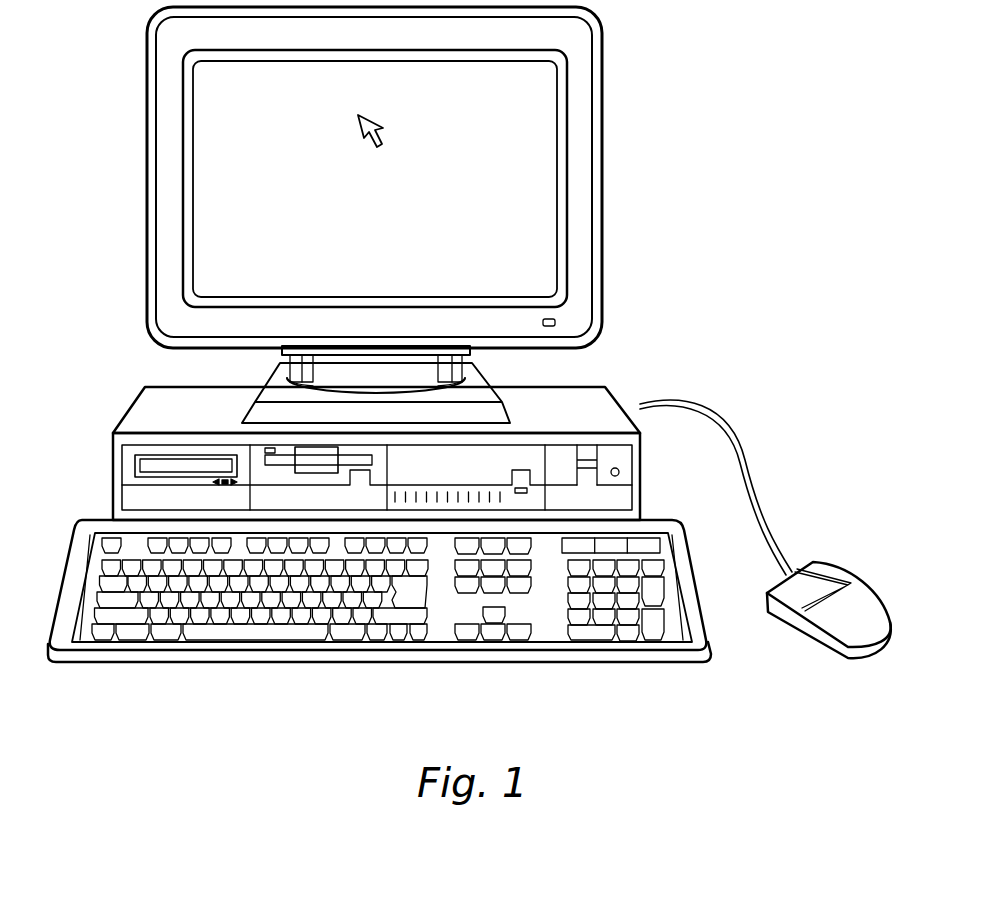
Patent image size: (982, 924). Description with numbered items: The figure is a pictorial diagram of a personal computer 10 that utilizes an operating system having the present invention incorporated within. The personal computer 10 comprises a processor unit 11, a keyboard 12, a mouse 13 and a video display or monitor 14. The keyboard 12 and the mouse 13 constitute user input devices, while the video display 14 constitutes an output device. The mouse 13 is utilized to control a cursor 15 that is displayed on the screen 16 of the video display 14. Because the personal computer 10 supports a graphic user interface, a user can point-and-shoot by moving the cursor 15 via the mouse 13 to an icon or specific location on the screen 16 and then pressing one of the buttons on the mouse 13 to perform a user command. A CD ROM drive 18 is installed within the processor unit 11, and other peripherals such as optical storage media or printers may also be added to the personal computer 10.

The personal computer 10 is at (771, 246).
The processor unit 11 is at (128, 412).
The keyboard 12 is at (225, 662).
The mouse 13 is at (843, 574).
The video display 14 is at (603, 163).
The cursor 15 is at (376, 126).
The screen 16 is at (393, 218).
The CD ROM drive 18 is at (138, 466).